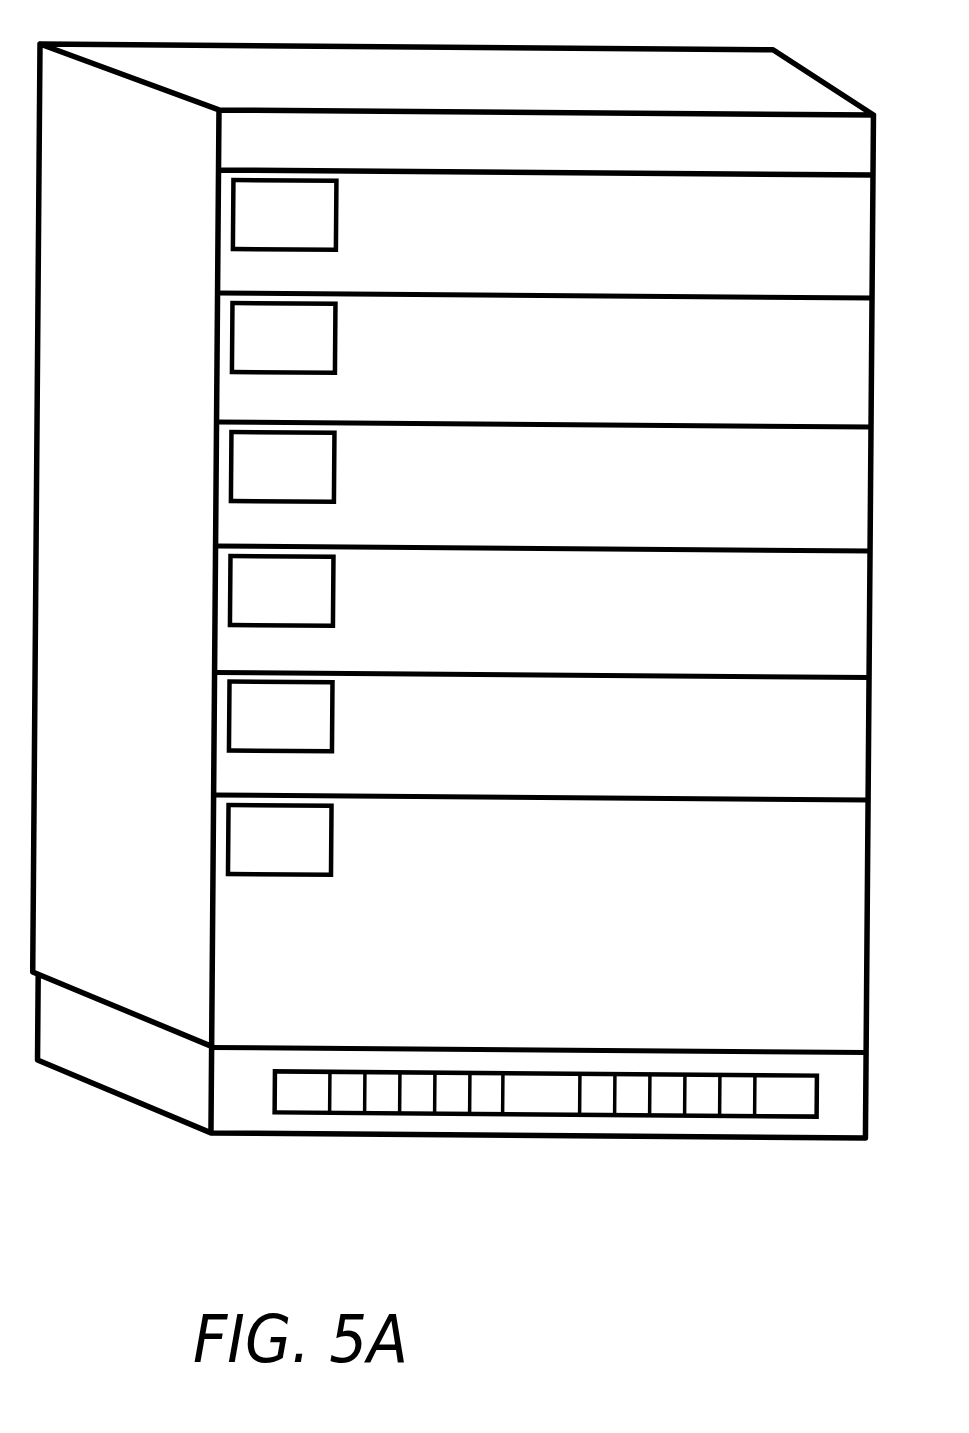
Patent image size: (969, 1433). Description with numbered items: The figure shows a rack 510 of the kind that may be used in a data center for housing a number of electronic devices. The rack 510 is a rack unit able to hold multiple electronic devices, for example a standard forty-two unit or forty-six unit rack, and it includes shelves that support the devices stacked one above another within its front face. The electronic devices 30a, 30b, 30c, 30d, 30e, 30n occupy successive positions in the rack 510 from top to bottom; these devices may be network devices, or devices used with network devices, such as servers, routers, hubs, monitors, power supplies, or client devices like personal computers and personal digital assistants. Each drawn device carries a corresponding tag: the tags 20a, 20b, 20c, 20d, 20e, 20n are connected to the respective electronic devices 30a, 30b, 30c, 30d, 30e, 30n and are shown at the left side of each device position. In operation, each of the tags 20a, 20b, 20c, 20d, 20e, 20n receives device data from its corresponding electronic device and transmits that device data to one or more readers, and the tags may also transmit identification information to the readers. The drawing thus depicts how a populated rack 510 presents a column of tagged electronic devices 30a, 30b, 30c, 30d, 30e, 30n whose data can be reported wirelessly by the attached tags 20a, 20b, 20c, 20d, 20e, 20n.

The rack 510 is at (698, 63).
The tag 20a is at (319, 226).
The tag 20b is at (319, 350).
The tag 20c is at (319, 478).
The tag 20d is at (319, 602).
The tag 20e is at (319, 728).
The tag 20n is at (319, 852).
The electronic device 30a is at (796, 282).
The electronic device 30b is at (796, 410).
The electronic device 30c is at (796, 534).
The electronic device 30d is at (796, 661).
The electronic device 30e is at (796, 784).
The electronic device 30n is at (796, 1036).